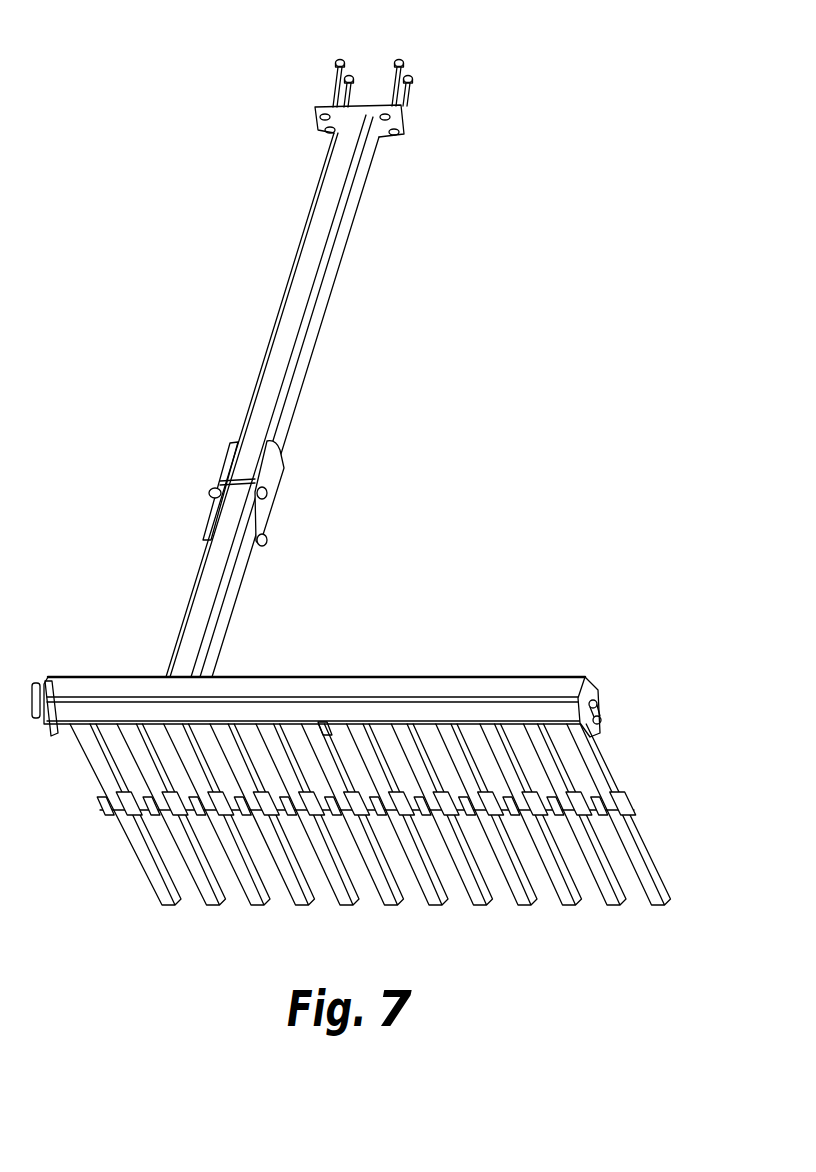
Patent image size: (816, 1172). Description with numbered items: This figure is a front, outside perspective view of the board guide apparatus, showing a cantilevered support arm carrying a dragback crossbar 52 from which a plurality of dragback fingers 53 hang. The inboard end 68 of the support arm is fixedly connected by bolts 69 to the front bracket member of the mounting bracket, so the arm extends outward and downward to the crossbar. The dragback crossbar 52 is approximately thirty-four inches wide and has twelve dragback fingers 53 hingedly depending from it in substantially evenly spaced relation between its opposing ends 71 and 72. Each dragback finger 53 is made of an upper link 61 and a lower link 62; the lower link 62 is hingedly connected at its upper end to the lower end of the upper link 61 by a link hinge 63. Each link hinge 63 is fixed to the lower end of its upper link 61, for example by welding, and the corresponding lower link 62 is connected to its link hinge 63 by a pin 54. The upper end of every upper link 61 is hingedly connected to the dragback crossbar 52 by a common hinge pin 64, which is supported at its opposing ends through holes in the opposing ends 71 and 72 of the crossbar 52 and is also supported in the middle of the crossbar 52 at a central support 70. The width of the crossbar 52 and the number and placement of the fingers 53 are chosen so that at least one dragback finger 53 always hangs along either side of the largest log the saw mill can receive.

The dragback crossbar 52 is at (410, 677).
The dragback finger 53 is at (411, 852).
The pin 54 is at (634, 811).
The upper link 61 is at (648, 805).
The lower link 62 is at (650, 850).
The link hinge 63 is at (630, 798).
The common hinge pin 64 is at (600, 715).
The inboard end of support arm 68 is at (380, 144).
The bolts 69 is at (335, 97).
The central support 70 is at (330, 728).
The opposing end of dragback crossbar 71 is at (45, 680).
The opposing end of dragback crossbar 72 is at (586, 678).